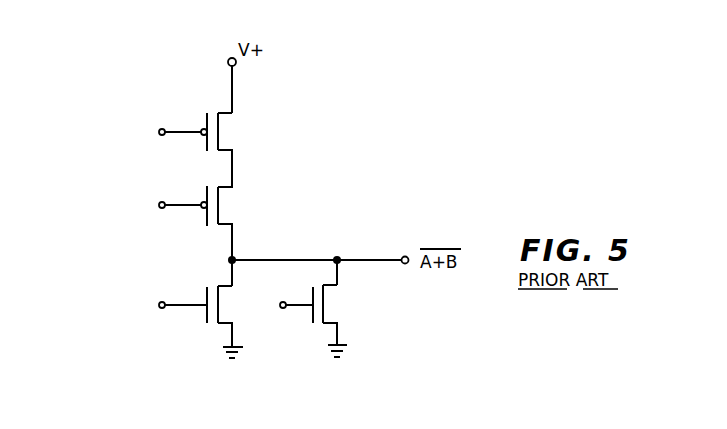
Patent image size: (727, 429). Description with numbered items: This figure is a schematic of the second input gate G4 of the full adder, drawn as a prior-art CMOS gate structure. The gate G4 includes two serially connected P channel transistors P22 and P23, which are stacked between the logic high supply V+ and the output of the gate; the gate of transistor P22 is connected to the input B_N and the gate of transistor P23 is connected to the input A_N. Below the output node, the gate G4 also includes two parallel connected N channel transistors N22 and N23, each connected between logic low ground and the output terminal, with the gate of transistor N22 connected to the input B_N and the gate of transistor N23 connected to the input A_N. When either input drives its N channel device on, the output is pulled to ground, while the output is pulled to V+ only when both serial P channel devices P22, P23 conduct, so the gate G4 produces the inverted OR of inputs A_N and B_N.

The transistor P22 is at (195, 146).
The transistor P23 is at (195, 218).
The transistor N23 is at (185, 309).
The transistor N22 is at (309, 308).
The second input gate G4 is at (397, 212).